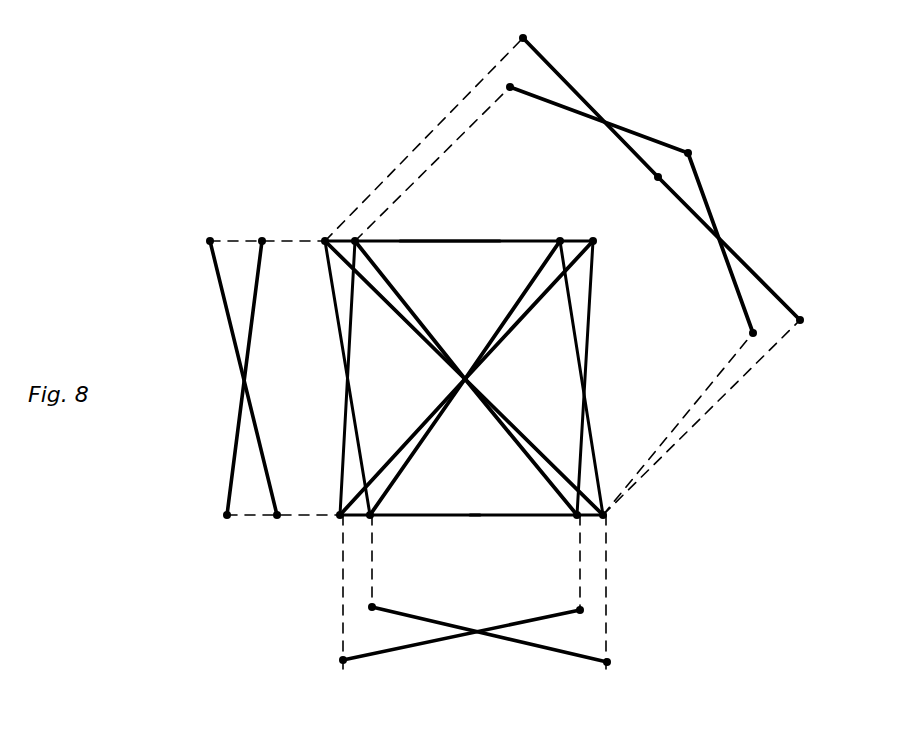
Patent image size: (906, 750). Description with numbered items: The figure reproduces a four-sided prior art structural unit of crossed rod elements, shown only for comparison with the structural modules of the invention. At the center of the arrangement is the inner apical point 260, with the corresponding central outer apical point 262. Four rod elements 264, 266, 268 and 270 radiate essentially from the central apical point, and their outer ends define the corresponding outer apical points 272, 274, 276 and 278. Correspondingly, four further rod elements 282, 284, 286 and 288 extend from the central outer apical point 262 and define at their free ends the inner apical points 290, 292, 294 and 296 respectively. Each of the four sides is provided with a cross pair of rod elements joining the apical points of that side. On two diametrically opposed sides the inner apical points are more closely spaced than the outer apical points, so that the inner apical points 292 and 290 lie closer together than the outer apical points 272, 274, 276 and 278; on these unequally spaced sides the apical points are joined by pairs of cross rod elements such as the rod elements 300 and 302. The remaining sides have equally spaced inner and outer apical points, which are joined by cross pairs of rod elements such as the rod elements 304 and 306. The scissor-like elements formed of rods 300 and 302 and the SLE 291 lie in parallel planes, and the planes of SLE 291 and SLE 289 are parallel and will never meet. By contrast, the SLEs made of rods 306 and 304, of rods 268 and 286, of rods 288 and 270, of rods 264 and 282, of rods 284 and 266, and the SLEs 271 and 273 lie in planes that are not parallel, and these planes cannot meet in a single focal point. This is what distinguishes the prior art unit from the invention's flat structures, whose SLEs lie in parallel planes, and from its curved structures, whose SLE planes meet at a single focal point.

The inner apical point 260 is at (660, 182).
The central outer apical point 262 is at (466, 386).
The rod element 264 is at (540, 450).
The rod element 266 is at (390, 460).
The rod element 268 is at (380, 291).
The rod element 270 is at (517, 323).
The SLE 271 is at (589, 336).
The outer apical point 272 is at (606, 516).
The SLE 273 is at (593, 447).
The outer apical point 274 is at (339, 518).
The outer apical point 276 is at (324, 238).
The outer apical point 278 is at (594, 239).
The rod element 282 is at (548, 483).
The rod element 284 is at (389, 486).
The rod element 286 is at (411, 306).
The rod element 288 is at (512, 267).
The SLE 289 is at (520, 240).
The inner apical point 290 is at (751, 334).
The SLE 291 is at (440, 240).
The inner apical point 292 is at (372, 519).
The inner apical point 294 is at (358, 240).
The inner apical point 296 is at (562, 239).
The cross rod element 300 is at (413, 518).
The cross rod element 302 is at (507, 518).
The cross rod element 304 is at (337, 316).
The cross rod element 306 is at (353, 320).